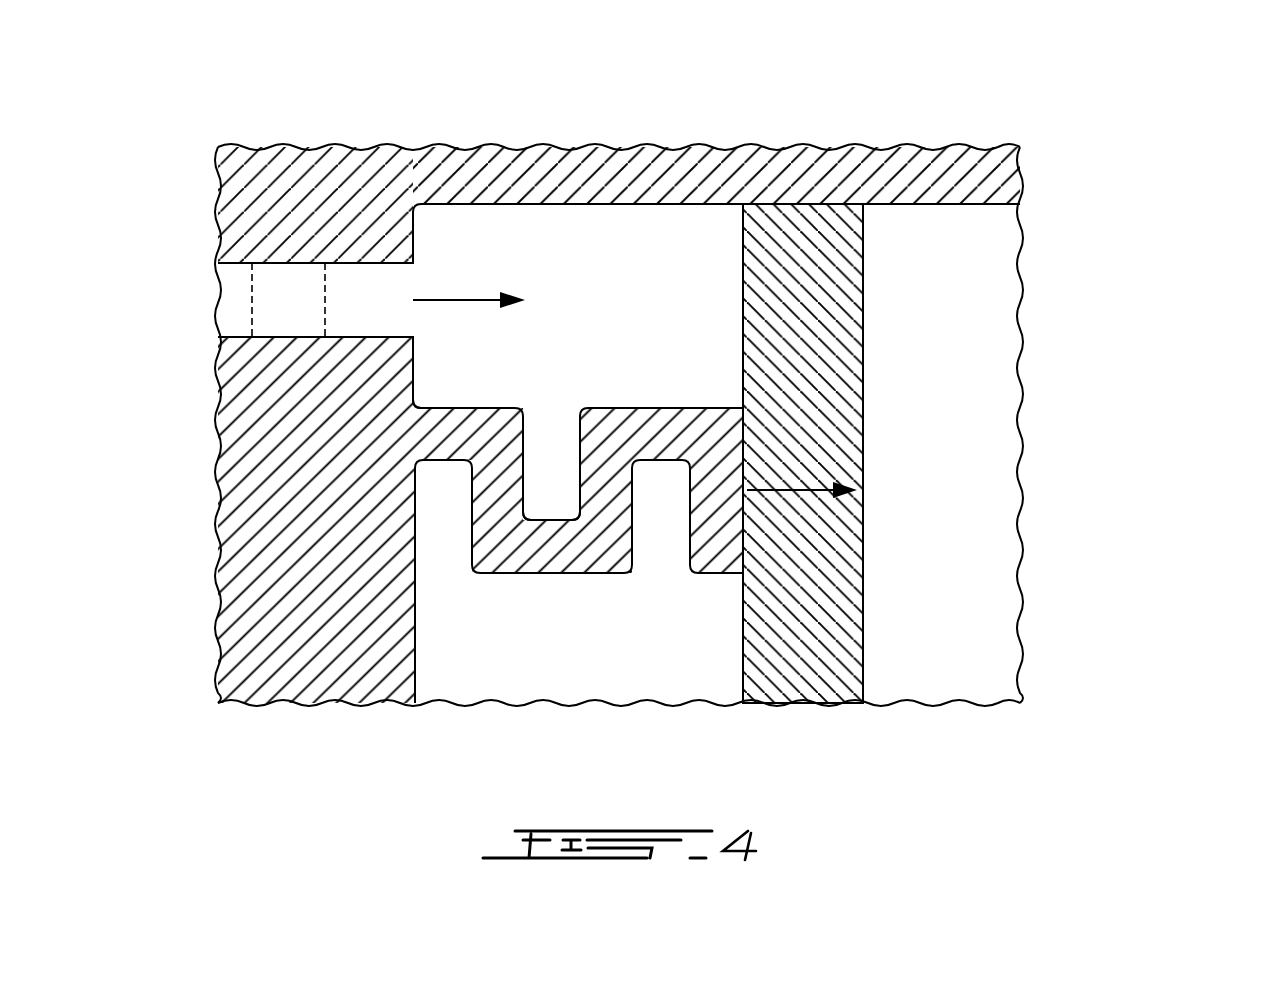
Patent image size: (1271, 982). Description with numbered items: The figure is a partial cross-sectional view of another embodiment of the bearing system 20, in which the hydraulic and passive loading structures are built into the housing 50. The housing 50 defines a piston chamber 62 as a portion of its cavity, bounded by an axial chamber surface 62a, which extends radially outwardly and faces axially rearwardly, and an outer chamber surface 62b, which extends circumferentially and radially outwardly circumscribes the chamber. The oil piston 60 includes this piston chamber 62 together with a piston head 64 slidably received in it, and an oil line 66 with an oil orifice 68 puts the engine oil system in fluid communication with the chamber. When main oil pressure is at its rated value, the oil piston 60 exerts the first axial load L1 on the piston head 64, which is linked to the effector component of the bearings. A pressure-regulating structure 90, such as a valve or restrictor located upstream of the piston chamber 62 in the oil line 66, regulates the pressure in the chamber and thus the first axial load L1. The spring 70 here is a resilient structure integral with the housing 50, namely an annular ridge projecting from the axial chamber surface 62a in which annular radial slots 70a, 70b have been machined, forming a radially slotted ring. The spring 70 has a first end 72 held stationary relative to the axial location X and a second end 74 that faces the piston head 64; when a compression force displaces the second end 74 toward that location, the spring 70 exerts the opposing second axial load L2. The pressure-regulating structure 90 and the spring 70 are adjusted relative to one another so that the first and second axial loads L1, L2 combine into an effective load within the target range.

The bearing system 20 is at (166, 192).
The housing 50 is at (855, 128).
The oil piston 60 is at (1060, 424).
The piston chamber 62 is at (631, 225).
The axial chamber surface 62a is at (415, 238).
The outer chamber surface 62b is at (573, 206).
The piston head 64 is at (838, 365).
The oil line 66 is at (355, 333).
The oil orifice 68 is at (415, 264).
The spring 70 is at (575, 372).
The annular radial slot 70a is at (580, 452).
The annular radial slot 70b is at (447, 570).
The first end 72 is at (430, 407).
The second end 74 is at (745, 405).
The pressure-regulating structure 90 is at (305, 315).
The first axial load L1 is at (428, 298).
The second axial load L2 is at (793, 493).